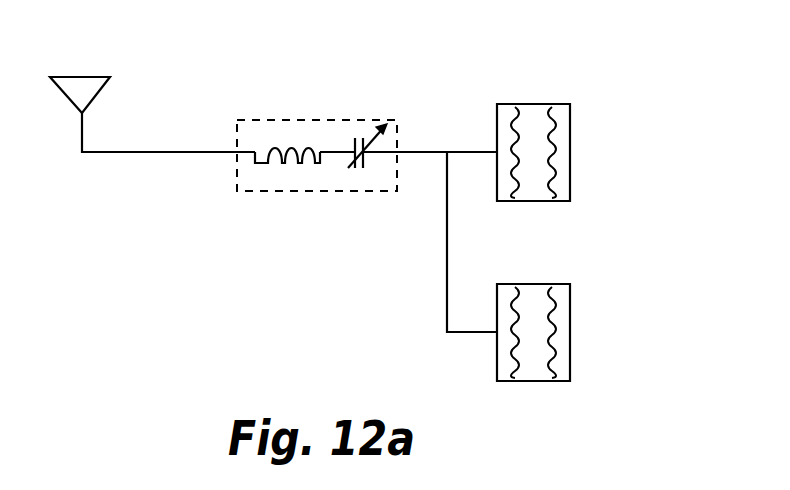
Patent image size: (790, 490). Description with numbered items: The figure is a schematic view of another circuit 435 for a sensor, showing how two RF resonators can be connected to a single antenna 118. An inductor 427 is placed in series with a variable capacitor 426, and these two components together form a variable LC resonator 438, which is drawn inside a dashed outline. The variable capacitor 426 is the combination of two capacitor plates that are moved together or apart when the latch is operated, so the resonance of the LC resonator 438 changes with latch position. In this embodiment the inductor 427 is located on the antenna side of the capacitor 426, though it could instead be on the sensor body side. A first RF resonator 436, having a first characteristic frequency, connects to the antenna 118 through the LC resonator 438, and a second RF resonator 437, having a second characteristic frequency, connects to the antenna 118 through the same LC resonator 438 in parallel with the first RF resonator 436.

The antenna 118 is at (70, 77).
The circuit 435 is at (442, 36).
The variable LC resonator 438 is at (261, 120).
The inductor 427 is at (279, 166).
The variable capacitor 426 is at (364, 168).
The first RF resonator 436 is at (570, 122).
The second RF resonator 437 is at (570, 313).